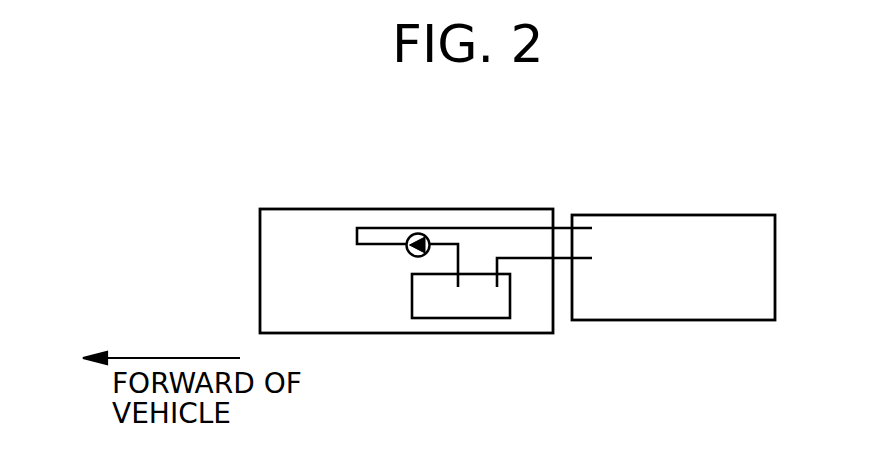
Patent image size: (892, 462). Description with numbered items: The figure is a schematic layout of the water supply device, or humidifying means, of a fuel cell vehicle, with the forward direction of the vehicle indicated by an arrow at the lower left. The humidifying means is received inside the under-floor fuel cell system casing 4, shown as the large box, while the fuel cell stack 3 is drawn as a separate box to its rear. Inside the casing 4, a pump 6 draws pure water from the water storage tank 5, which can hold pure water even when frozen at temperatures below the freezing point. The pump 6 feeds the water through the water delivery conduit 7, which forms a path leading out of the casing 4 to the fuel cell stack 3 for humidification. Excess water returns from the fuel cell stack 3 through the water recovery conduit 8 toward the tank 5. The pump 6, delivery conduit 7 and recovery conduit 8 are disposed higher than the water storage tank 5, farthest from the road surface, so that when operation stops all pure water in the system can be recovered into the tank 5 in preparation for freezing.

The fuel cell stack 3 is at (731, 321).
The under-floor fuel cell system casing 4 is at (460, 209).
The water storage tank 5 is at (462, 318).
The pump 6 is at (417, 233).
The water delivery conduit 7 is at (377, 228).
The water recovery conduit 8 is at (533, 259).